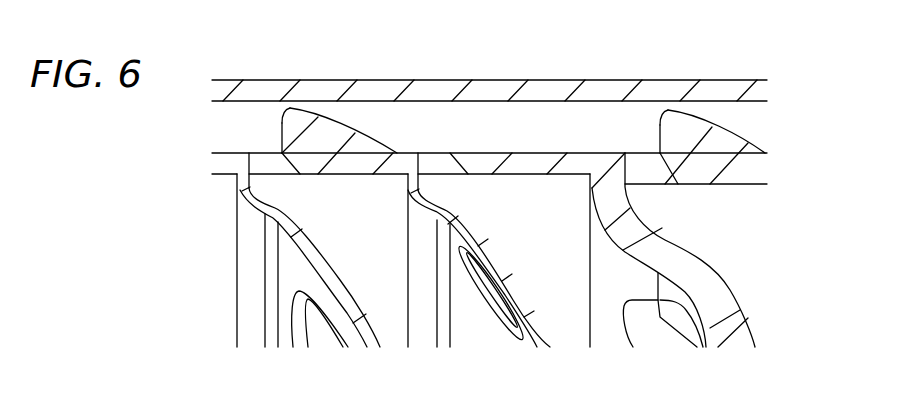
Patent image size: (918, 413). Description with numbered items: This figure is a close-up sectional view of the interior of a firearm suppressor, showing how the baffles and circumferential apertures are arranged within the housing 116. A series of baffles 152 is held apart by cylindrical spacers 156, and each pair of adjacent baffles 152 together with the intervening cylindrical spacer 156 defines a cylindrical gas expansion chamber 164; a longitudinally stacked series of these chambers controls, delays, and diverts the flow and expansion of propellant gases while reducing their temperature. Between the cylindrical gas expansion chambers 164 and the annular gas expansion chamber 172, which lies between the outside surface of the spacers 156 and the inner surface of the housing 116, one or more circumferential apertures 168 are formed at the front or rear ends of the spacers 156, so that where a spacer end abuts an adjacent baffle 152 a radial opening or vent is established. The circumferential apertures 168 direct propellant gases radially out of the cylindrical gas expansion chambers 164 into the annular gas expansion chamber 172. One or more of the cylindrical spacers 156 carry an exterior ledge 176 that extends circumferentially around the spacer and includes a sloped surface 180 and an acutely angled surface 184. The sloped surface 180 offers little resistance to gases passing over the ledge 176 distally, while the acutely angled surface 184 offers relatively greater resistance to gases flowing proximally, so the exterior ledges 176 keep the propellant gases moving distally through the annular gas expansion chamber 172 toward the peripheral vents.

The housing 116 is at (493, 80).
The baffles 152 is at (352, 333).
The cylindrical spacers 156 is at (222, 163).
The cylindrical gas expansion chamber 164 is at (225, 274).
The circumferential apertures 168 is at (265, 162).
The annular gas expansion chamber 172 is at (414, 136).
The exterior ledge 176 is at (285, 110).
The sloped surface 180 is at (355, 135).
The acutely angled surface 184 is at (280, 127).